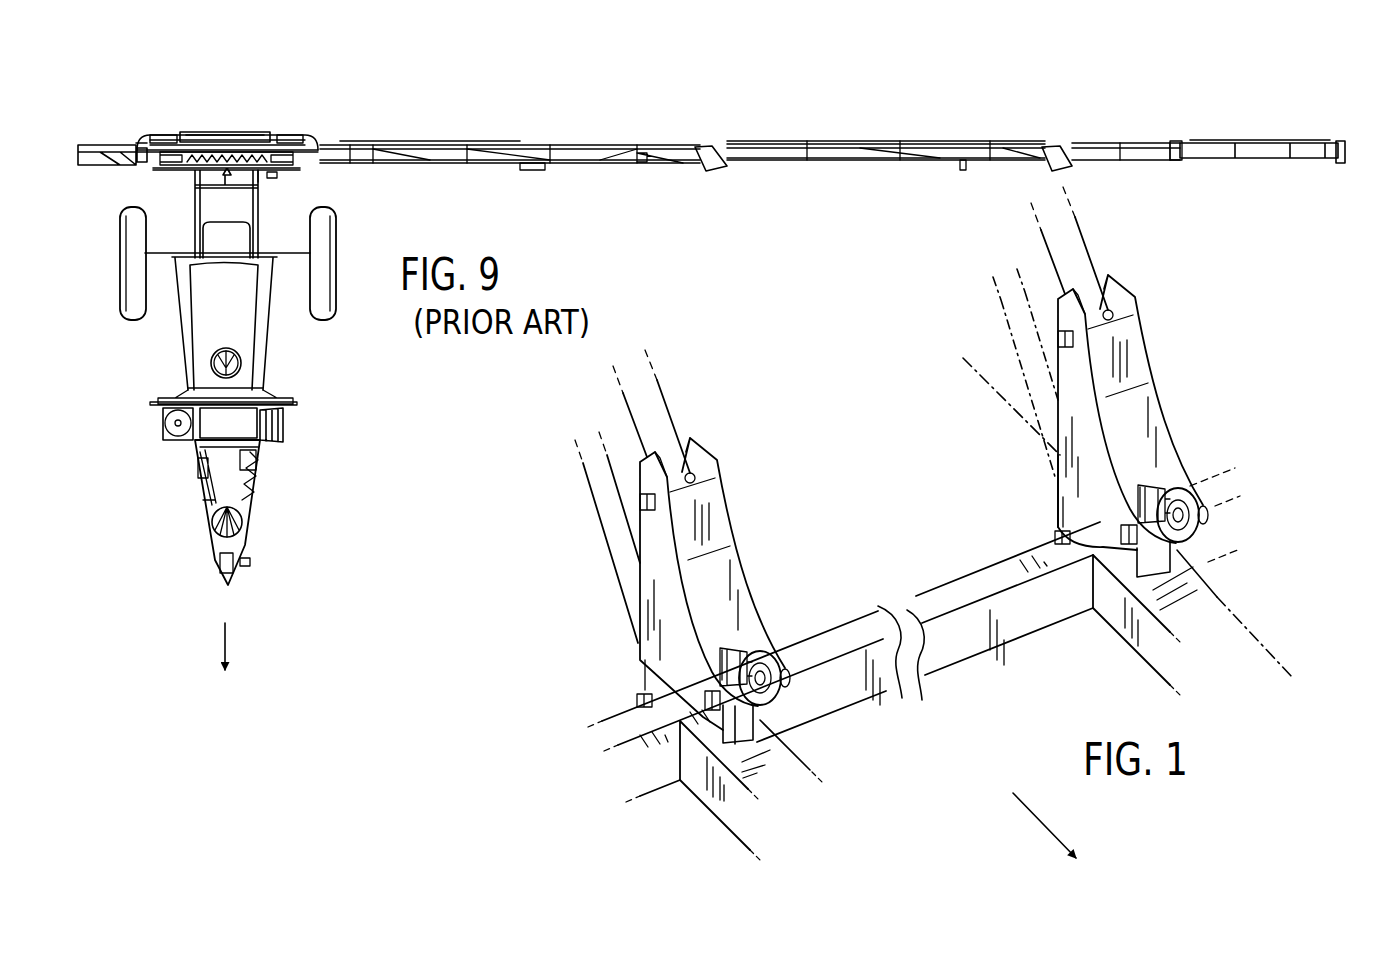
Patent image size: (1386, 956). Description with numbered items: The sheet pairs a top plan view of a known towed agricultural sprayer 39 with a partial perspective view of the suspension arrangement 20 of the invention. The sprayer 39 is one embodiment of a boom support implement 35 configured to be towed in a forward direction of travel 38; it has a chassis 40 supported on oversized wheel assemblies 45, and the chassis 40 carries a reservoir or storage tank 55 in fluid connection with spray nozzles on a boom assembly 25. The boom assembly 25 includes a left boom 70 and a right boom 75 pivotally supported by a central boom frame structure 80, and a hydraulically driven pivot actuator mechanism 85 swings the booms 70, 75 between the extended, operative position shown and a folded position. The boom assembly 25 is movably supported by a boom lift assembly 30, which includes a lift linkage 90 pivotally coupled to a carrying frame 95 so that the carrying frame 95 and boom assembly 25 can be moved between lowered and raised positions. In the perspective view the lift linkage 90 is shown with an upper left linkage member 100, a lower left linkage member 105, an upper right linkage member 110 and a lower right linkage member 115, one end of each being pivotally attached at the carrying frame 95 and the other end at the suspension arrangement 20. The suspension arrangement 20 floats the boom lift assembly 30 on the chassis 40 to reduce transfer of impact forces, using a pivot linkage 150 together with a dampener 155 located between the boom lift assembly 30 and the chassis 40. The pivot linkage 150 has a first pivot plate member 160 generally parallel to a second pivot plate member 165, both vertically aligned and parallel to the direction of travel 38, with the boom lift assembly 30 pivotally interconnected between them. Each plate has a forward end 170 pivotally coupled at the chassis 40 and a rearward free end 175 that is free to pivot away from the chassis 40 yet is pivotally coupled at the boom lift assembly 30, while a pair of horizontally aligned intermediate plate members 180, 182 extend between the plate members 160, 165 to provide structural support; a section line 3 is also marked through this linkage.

In FIG. 1, the section line 3- 3 is at (995, 333).
In FIG. 1, the suspension arrangement 20 is at (1028, 474).
In FIG. 9, the boom assembly 25 is at (381, 126).
In FIG. 9, the boom lift assembly 30 is at (320, 195).
In FIG. 1, the boom lift assembly 30 is at (1247, 242).
In FIG. 9, the boom support implement 35 is at (340, 504).
In FIG. 1, the boom support implement 35 is at (1295, 613).
In FIG. 9, the forward direction of travel 38 is at (232, 635).
In FIG. 1, the forward direction of travel 38 is at (1028, 818).
In FIG. 9, the towed agricultural sprayer 39 is at (240, 303).
In FIG. 9, the chassis 40 is at (198, 505).
In FIG. 1, the chassis 40 is at (980, 680).
In FIG. 9, the oversized wheel assemblies 45 is at (340, 304).
In FIG. 9, the reservoir or storage tank 55 is at (278, 357).
In FIG. 9, the left boom 70 is at (598, 144).
In FIG. 9, the right boom 75 is at (85, 168).
In FIG. 9, the central boom frame structure 80 is at (195, 145).
In FIG. 9, the pivot actuator mechanism 85 is at (161, 120).
In FIG. 9, the lift linkage 90 is at (188, 214).
In FIG. 1, the lift linkage 90 is at (1095, 212).
In FIG. 9, the carrying frame 95 is at (273, 182).
In FIG. 1, the upper left linkage member 100 is at (1090, 264).
In FIG. 1, the lower left linkage member 105 is at (1041, 318).
In FIG. 1, the upper right linkage member 110 is at (675, 424).
In FIG. 1, the lower right linkage member 115 is at (597, 530).
In FIG. 1, the pivot linkage 150 is at (1177, 418).
In FIG. 1, the dampener 155 is at (1089, 551).
In FIG. 1, the first pivot plate member 160 is at (1180, 466).
In FIG. 1, the second pivot plate member 165 is at (1060, 492).
In FIG. 1, the forward end 170 is at (1216, 519).
In FIG. 1, the rearward free end 175 is at (1042, 531).
In FIG. 1, the intermediate plate member 180 is at (1158, 413).
In FIG. 1, the intermediate plate member 182 is at (1131, 354).